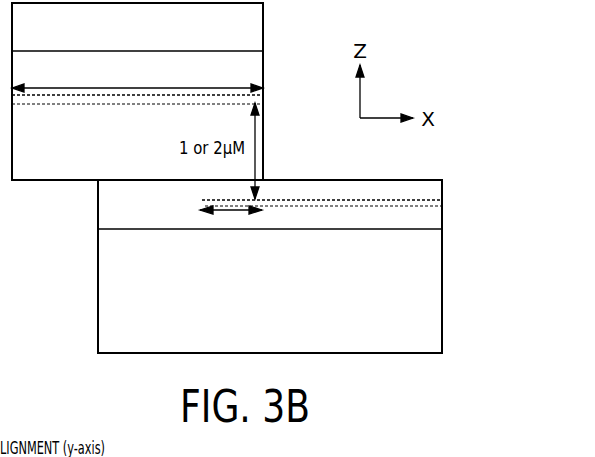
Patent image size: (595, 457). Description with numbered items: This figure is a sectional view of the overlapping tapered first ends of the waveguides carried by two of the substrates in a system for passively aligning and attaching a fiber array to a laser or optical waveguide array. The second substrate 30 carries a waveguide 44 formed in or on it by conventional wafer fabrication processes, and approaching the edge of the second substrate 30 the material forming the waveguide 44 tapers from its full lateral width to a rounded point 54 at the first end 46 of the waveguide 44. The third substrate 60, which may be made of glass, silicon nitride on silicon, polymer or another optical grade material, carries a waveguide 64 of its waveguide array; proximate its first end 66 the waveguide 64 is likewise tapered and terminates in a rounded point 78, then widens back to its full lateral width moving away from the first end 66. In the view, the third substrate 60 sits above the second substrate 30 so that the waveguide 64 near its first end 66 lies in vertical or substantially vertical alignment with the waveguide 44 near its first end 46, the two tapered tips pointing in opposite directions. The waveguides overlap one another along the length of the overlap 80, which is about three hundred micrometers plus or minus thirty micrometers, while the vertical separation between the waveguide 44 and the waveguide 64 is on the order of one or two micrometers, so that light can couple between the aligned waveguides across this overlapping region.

The second substrate 30 is at (422, 270).
The waveguide 44 is at (423, 200).
The first end 46 is at (186, 205).
The rounded point 54 is at (203, 200).
The third substrate 60 is at (197, 70).
The waveguide 64 is at (40, 106).
The first end 66 is at (278, 101).
The rounded point 78 is at (263, 100).
The overlap 80 is at (234, 213).